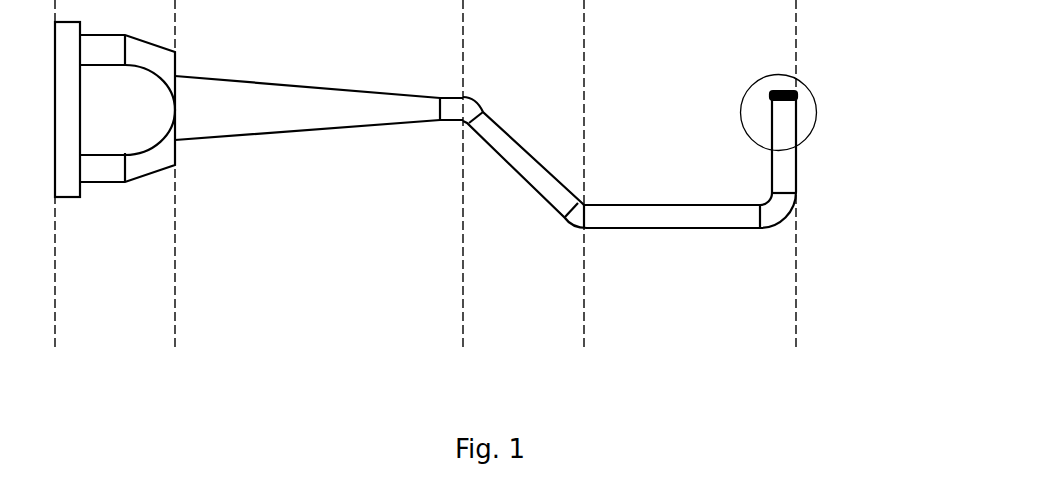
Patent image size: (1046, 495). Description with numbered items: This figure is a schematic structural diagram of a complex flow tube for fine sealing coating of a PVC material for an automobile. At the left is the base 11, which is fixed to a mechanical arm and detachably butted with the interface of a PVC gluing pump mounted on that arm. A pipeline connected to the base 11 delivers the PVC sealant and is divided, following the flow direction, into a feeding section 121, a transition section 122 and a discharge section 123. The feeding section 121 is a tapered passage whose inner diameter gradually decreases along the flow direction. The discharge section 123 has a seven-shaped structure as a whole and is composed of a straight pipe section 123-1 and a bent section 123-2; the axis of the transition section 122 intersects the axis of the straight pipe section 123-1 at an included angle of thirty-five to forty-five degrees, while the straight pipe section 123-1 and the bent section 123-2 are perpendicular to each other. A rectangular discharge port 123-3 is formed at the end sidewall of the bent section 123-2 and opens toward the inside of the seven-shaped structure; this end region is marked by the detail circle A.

The base 11 is at (115, 190).
The feeding section 121 is at (319, 217).
The transition section 122 is at (525, 227).
The discharge section 123 is at (764, 216).
The straight pipe section 123-1 is at (685, 218).
The bent section 123-2 is at (783, 170).
The rectangular discharge port 123-3 is at (772, 118).
The enlarged detail portion A is at (747, 95).